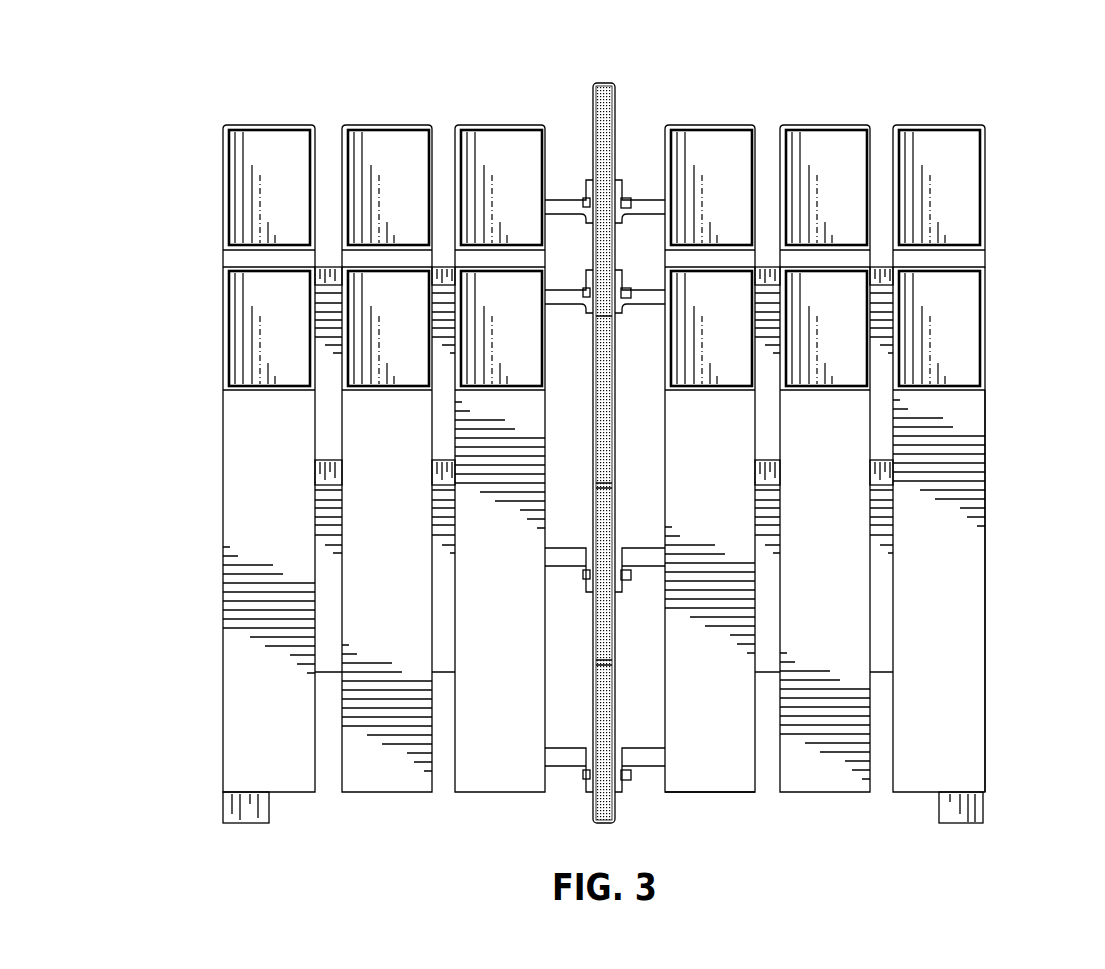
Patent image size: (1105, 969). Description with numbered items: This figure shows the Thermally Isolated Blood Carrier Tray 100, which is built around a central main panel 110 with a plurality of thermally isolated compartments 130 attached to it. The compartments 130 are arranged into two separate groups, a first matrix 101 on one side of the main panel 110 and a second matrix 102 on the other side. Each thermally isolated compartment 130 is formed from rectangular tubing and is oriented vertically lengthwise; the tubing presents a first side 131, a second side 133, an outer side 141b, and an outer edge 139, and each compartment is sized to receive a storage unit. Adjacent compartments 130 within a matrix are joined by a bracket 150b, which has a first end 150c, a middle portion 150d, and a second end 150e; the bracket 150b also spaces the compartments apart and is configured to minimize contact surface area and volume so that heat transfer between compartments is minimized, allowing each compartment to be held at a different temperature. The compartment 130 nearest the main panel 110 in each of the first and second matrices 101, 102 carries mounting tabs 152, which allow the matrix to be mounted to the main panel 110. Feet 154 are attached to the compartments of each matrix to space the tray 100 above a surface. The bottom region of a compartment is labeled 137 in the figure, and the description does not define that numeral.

The Thermally Isolated Blood Carrier Tray 100 is at (124, 92).
The first matrix 101 is at (767, 84).
The second matrix 102 is at (327, 84).
The main panel 110 is at (593, 100).
The thermally isolated compartment 130 is at (925, 125).
The first side 131 is at (663, 455).
The second side 133 is at (755, 438).
The bottom edge 137 is at (725, 795).
The outer edge 139 is at (985, 780).
The outer side 141b is at (966, 716).
The bracket 150b is at (890, 630).
The first end 150c is at (317, 471).
The middle portion 150d is at (318, 588).
The second end 150e is at (440, 462).
The mounting tab 152 is at (648, 207).
The feet 154 is at (972, 811).